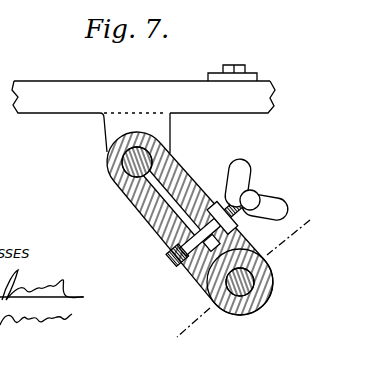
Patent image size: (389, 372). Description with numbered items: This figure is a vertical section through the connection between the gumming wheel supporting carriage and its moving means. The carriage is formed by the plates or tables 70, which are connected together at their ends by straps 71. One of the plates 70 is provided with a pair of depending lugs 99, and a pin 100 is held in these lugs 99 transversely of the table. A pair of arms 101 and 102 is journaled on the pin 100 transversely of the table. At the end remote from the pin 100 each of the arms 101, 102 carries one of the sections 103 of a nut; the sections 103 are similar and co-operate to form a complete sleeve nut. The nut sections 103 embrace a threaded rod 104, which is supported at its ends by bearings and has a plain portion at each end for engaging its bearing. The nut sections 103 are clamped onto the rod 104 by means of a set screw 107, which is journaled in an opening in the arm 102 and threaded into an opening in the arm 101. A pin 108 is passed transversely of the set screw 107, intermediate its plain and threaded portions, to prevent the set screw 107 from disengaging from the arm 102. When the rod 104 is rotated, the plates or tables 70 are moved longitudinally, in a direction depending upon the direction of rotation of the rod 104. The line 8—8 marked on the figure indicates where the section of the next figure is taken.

The plates 70 is at (42, 92).
The straps 71 is at (253, 74).
The depending lugs 99 is at (107, 138).
The pin 100 is at (130, 170).
The arm 101 is at (138, 207).
The arm 102 is at (187, 180).
The pin 108 is at (203, 208).
The set screw 107 is at (249, 200).
The nut sections 103 is at (276, 276).
The threaded rod 104 is at (254, 285).
The section line 8— 8 is at (242, 279).